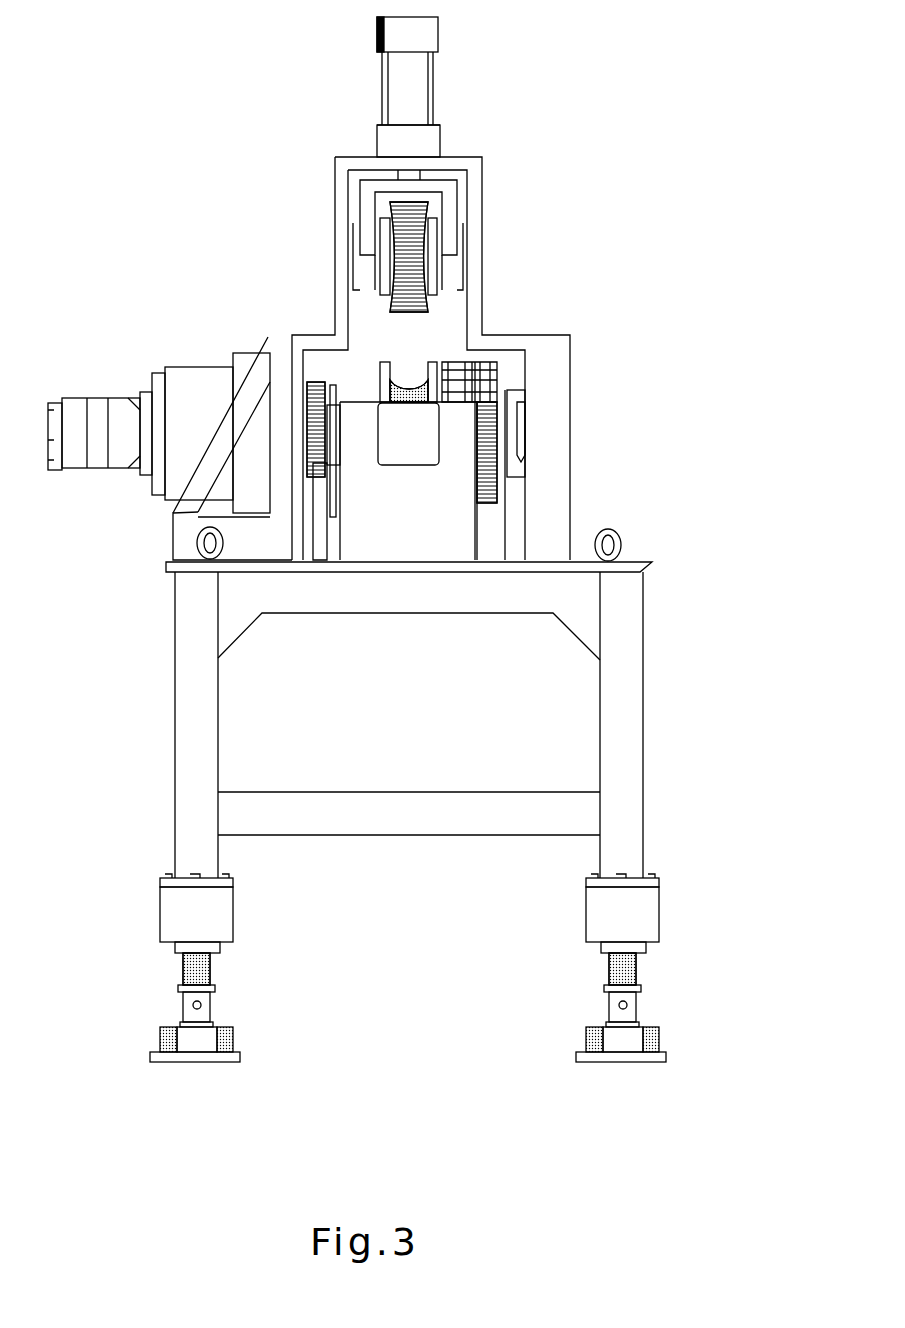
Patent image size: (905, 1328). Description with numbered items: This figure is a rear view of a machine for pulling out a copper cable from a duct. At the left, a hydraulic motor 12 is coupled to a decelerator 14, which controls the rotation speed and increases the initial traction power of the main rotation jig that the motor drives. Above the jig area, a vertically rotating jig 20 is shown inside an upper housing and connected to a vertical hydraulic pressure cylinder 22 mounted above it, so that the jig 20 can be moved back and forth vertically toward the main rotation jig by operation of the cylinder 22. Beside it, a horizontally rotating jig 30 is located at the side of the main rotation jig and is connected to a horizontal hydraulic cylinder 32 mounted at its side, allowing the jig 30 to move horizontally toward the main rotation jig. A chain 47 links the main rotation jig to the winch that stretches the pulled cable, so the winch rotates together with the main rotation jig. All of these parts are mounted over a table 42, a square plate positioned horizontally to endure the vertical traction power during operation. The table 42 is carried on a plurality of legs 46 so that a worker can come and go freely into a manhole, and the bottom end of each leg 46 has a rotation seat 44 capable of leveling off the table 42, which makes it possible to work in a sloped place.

The hydraulic motor 12 is at (77, 417).
The decelerator 14 is at (193, 388).
The vertically rotating jig 20 is at (436, 228).
The vertical hydraulic pressure cylinder 22 is at (422, 35).
The horizontally rotating jig 30 is at (413, 365).
The horizontal hydraulic cylinder 32 is at (422, 435).
The table 42 is at (652, 565).
The rotation seat 44 is at (659, 1038).
The leg 46 is at (625, 725).
The chain 47 is at (482, 372).